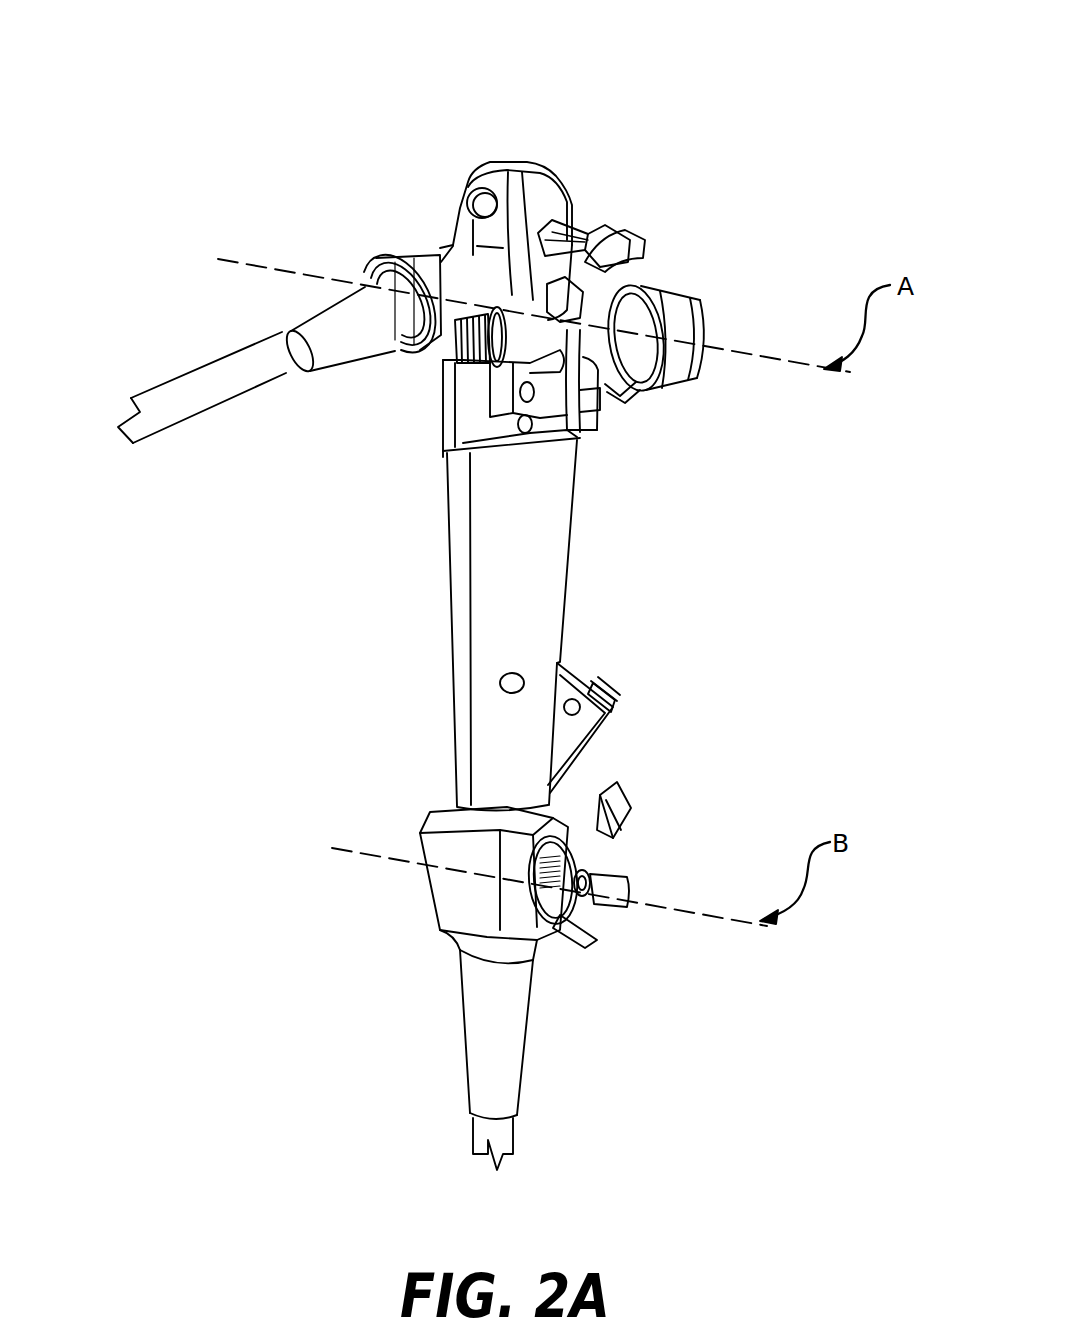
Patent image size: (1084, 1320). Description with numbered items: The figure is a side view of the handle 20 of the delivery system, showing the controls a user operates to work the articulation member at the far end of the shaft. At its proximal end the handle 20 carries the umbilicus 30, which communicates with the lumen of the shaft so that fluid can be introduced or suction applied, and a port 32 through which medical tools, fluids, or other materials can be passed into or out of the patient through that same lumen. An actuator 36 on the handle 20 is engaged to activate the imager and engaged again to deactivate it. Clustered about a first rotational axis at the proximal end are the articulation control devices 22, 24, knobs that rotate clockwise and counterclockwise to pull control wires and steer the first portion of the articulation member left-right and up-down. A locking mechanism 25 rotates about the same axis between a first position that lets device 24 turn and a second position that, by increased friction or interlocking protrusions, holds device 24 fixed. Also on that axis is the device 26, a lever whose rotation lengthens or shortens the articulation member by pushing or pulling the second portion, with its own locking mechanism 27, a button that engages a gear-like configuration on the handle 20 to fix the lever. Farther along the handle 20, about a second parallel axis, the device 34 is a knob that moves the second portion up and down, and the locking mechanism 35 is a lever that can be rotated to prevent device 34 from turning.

The handle 20 is at (604, 150).
The articulation control device 22 is at (583, 243).
The articulation control device 24 is at (632, 396).
The locking mechanism 25 is at (696, 318).
The device 26 is at (482, 362).
The locking mechanism 27 is at (458, 338).
The umbilicus 30 is at (197, 385).
The port 32 is at (613, 690).
The device 34 is at (614, 905).
The locking mechanism 35 is at (622, 783).
The actuator 36 is at (473, 202).